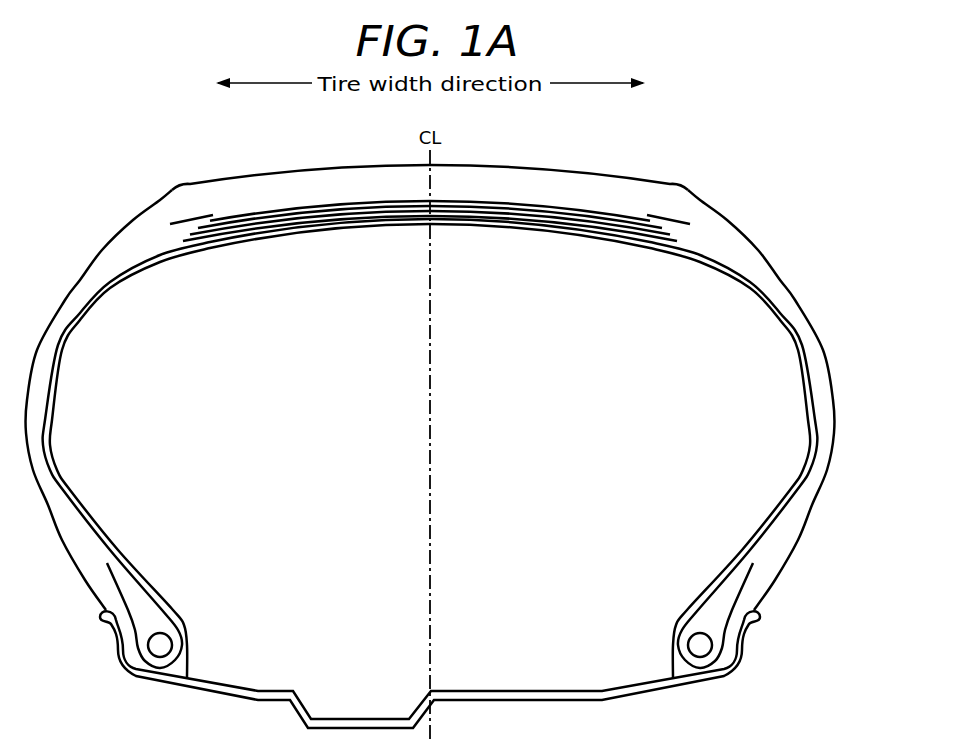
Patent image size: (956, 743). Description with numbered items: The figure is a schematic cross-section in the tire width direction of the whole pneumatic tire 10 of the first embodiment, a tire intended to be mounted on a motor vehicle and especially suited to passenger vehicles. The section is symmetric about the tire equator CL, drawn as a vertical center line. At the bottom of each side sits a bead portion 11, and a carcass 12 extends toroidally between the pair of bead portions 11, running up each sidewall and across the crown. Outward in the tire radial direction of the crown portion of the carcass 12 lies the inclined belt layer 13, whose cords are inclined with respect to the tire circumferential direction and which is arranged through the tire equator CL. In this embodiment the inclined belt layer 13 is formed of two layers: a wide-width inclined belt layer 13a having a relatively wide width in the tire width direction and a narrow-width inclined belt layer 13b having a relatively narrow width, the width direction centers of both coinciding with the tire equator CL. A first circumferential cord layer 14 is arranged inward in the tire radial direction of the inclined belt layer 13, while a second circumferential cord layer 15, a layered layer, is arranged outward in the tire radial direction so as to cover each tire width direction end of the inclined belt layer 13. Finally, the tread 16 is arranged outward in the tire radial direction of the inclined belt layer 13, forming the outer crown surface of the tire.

The pneumatic tire 10 is at (742, 104).
The bead portion 11 is at (186, 579).
The carcass 12 is at (85, 520).
The inclined belt layer 13 is at (430, 268).
The wide-width inclined belt layer 13a is at (333, 296).
The narrow-width inclined belt layer 13b is at (307, 208).
The first circumferential cord layer 14 is at (623, 228).
The second circumferential cord layer 15 is at (180, 222).
The tread 16 is at (537, 183).